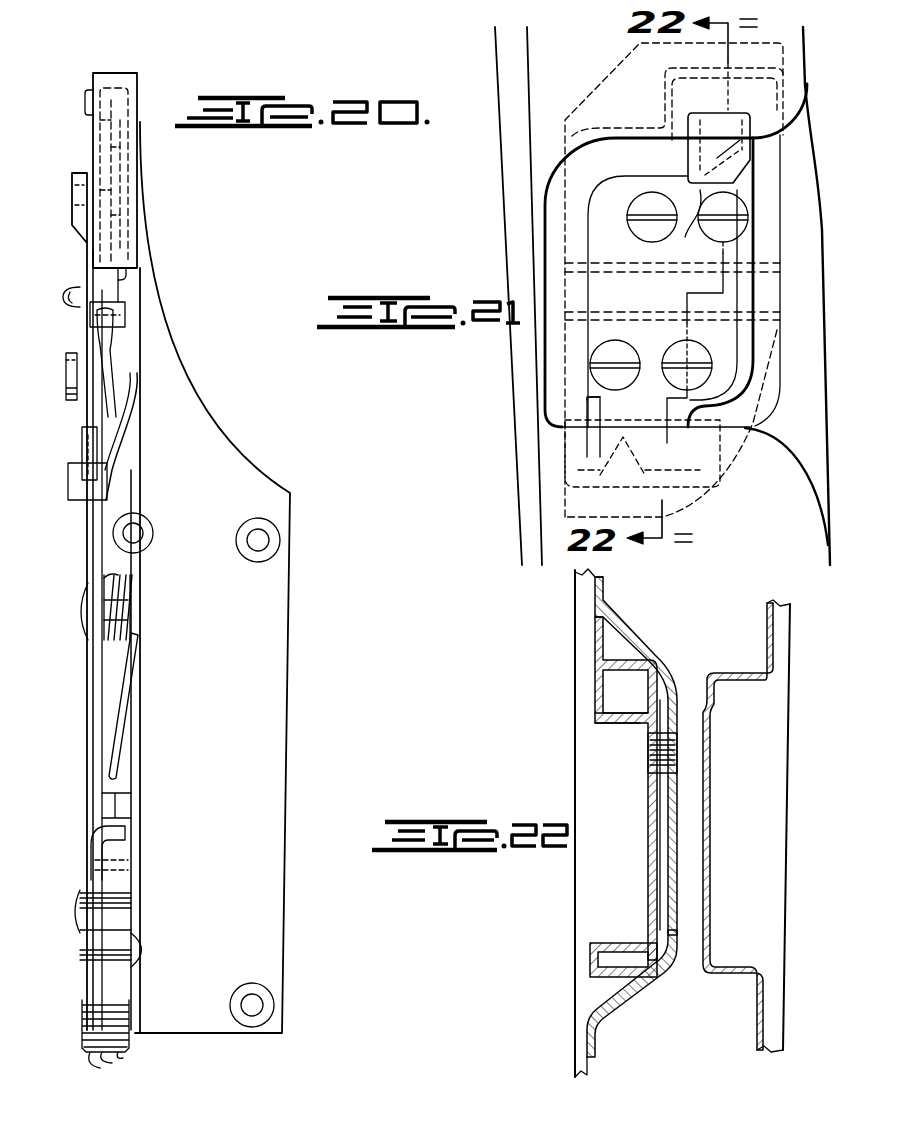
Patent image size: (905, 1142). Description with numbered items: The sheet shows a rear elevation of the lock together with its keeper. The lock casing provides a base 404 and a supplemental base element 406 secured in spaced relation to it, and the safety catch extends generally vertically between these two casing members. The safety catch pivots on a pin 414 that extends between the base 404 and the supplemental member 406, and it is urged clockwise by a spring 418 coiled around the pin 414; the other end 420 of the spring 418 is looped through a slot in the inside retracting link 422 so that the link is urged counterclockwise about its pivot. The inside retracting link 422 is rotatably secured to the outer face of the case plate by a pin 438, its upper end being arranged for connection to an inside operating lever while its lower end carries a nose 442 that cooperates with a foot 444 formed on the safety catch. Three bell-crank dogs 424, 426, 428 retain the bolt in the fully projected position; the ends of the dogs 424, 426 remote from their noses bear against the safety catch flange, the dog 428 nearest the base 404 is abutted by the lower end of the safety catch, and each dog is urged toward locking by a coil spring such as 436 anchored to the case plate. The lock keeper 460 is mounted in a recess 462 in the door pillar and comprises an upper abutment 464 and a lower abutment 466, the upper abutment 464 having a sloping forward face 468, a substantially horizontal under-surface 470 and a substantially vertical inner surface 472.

In FIG. 20, the base 404 is at (87, 768).
In FIG. 20, the supplemental base element 406 is at (140, 745).
In FIG. 20, the pin 414 is at (150, 605).
In FIG. 20, the spring 418 is at (123, 698).
In FIG. 20, the other end of the spring 420 is at (72, 291).
In FIG. 20, the inside retracting link 422 is at (75, 227).
In FIG. 20, the dog 424 is at (123, 872).
In FIG. 20, the dog 426 is at (110, 882).
In FIG. 20, the dog 428 is at (90, 875).
In FIG. 20, the coil spring 436 is at (130, 1053).
In FIG. 20, the pin 438 is at (70, 372).
In FIG. 20, the nose 442 is at (90, 442).
In FIG. 20, the foot 444 is at (100, 495).
In FIG. 21, the lock keeper 460 is at (768, 243).
In FIG. 22, the lock keeper 460 is at (622, 735).
In FIG. 21, the recess 462 is at (805, 393).
In FIG. 22, the recess 462 is at (640, 662).
In FIG. 21, the upper abutment 464 is at (718, 158).
In FIG. 22, the upper abutment 464 is at (608, 718).
In FIG. 21, the lower abutment 466 is at (600, 397).
In FIG. 22, the lower abutment 466 is at (614, 945).
In FIG. 21, the sloping forward face 468 is at (730, 181).
In FIG. 21, the under-surface 470 is at (669, 290).
In FIG. 21, the inner surface 472 is at (687, 155).